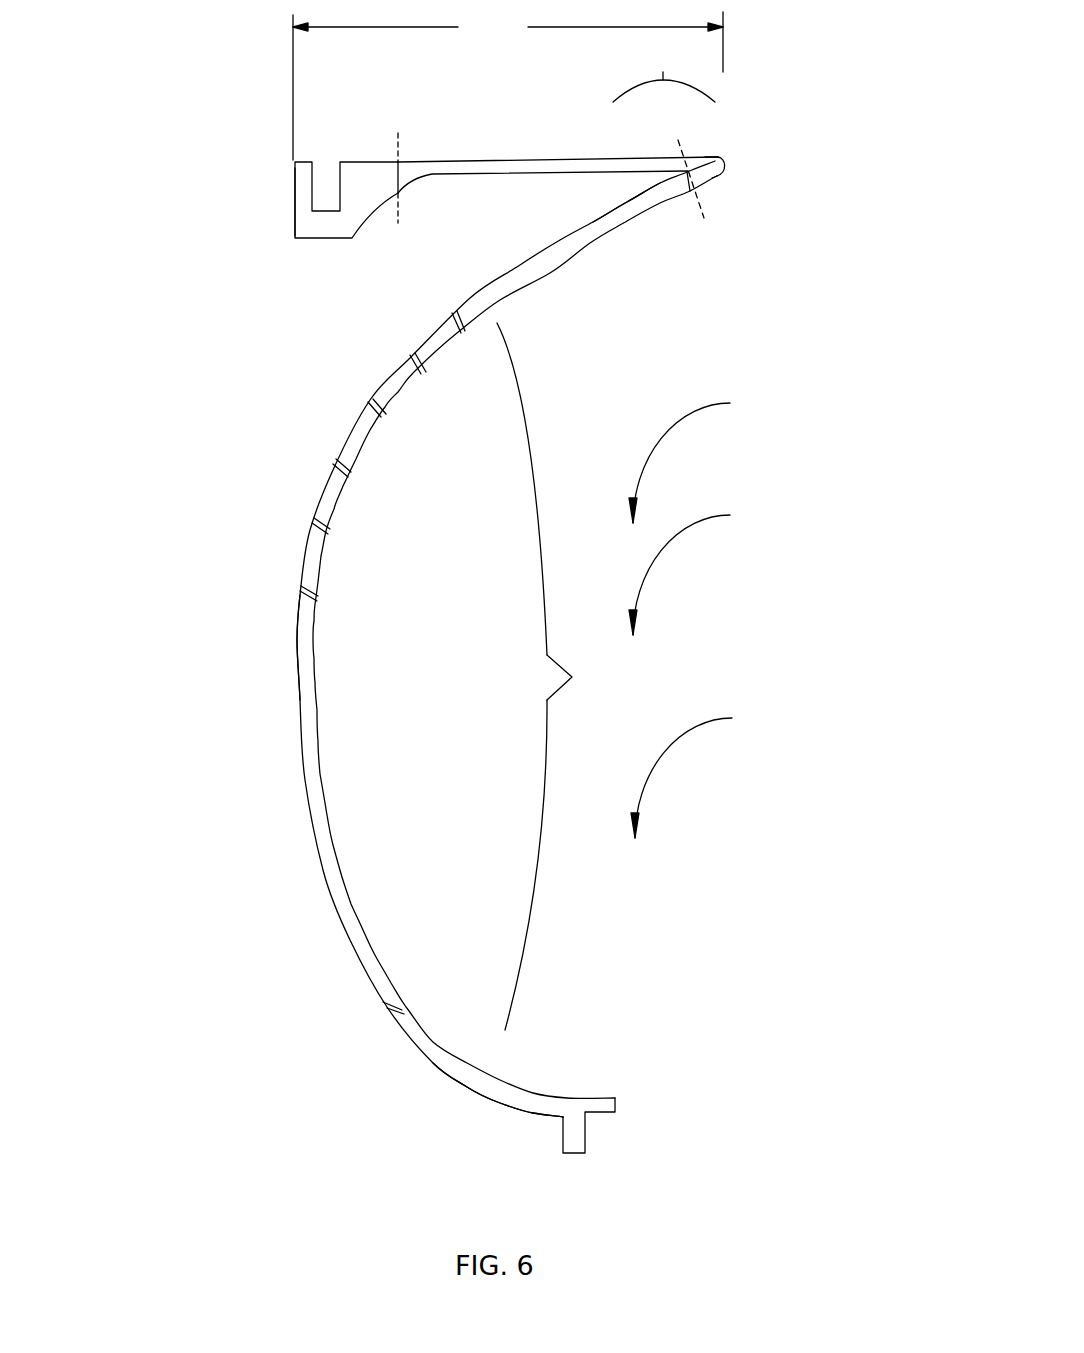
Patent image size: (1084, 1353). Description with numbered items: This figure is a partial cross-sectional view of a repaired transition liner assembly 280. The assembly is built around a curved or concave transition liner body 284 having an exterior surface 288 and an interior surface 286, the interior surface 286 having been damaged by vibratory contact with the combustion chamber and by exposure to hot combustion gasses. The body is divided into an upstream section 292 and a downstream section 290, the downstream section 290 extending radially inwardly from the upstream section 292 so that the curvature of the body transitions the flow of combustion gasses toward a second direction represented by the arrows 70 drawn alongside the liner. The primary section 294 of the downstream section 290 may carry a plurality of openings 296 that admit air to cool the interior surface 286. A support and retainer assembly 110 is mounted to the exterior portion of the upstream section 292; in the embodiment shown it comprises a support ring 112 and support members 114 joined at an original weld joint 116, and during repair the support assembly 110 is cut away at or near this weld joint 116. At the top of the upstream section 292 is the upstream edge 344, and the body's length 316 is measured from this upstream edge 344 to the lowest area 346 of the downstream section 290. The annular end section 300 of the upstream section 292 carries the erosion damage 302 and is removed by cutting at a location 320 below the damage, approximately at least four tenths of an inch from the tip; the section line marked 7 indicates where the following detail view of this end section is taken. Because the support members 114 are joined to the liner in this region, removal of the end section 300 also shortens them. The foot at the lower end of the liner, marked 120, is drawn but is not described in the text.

The length 316 is at (508, 86).
The support and retainer assembly 110 is at (263, 180).
The support ring 112 is at (317, 230).
The support members 114 is at (428, 166).
The weld joint 116 is at (399, 162).
The section line for FIG. 7 is at (664, 129).
The upstream edge 344 is at (706, 154).
The annular end section 300 is at (727, 166).
The erosion damage 302 is at (725, 177).
The cutting location 320 is at (721, 187).
The exterior surface 288 is at (305, 792).
The interior surface 286 is at (332, 813).
The lowest area 346 is at (297, 633).
The openings 296 is at (367, 403).
The upstream section 292 is at (628, 206).
The transition liner body 284 is at (556, 289).
The primary section 294 is at (589, 677).
The transition liner assembly 280 is at (178, 525).
The arrow representing second direction of combustion gasses 70 is at (701, 612).
The downstream section 290 is at (533, 1085).
The foot mount 120 is at (582, 1132).